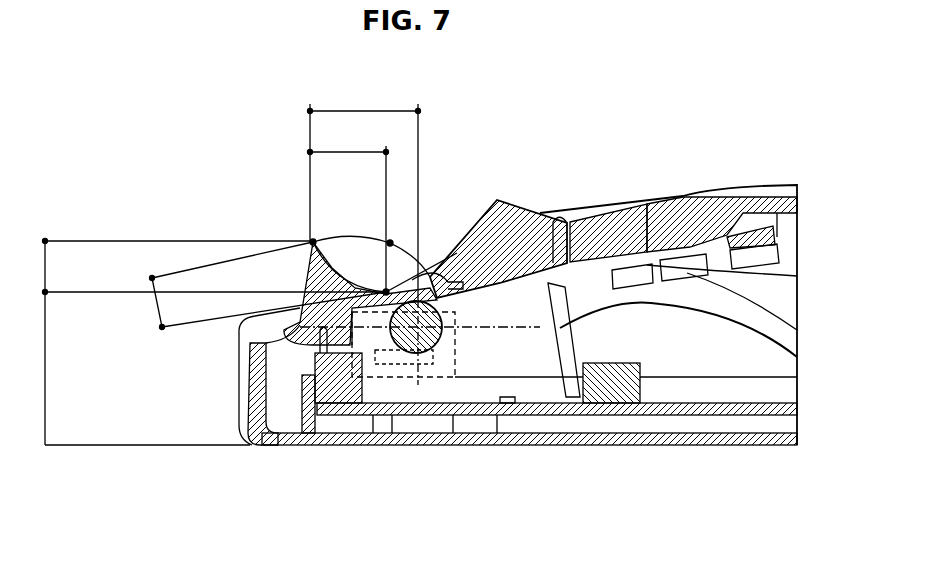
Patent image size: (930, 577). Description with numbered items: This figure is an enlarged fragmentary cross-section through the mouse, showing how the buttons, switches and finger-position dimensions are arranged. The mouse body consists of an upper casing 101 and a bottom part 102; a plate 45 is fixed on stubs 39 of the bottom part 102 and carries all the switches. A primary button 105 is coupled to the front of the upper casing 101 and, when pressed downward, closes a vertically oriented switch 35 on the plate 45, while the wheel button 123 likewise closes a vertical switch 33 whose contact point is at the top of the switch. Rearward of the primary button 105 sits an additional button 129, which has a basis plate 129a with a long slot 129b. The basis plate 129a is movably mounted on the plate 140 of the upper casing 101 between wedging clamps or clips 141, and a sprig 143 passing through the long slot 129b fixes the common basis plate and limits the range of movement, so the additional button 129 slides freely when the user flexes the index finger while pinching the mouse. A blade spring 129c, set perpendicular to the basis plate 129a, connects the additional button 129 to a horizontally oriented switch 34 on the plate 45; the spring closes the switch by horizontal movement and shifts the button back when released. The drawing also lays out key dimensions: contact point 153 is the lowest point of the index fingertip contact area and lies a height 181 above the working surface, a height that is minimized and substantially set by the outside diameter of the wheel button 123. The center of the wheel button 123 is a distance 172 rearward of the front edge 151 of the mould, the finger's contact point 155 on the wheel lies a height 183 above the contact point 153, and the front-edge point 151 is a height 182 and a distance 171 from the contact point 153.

The upper casing 101 is at (743, 186).
The bottom part 102 is at (264, 446).
The primary button 105 is at (233, 328).
The wheel button 123 is at (412, 280).
The additional button 129 is at (517, 213).
The basis plate 129a is at (600, 213).
The long slot 129b is at (677, 197).
The blade spring 129c is at (557, 398).
The plate 140 is at (740, 237).
The wedging clamps or clips 141 is at (797, 330).
The sprig 143 is at (797, 275).
The front edge 151 is at (313, 242).
The contact point 153 is at (304, 262).
The contact point 155 is at (390, 243).
The distance 171 is at (348, 218).
The distance 172 is at (364, 244).
The height 181 is at (140, 368).
The height 182 is at (208, 267).
The height 183 is at (247, 286).
The switch 33 is at (393, 403).
The switch 34 is at (607, 403).
The switch 35 is at (332, 407).
The stubs 39 is at (503, 423).
The plate 45 is at (745, 433).